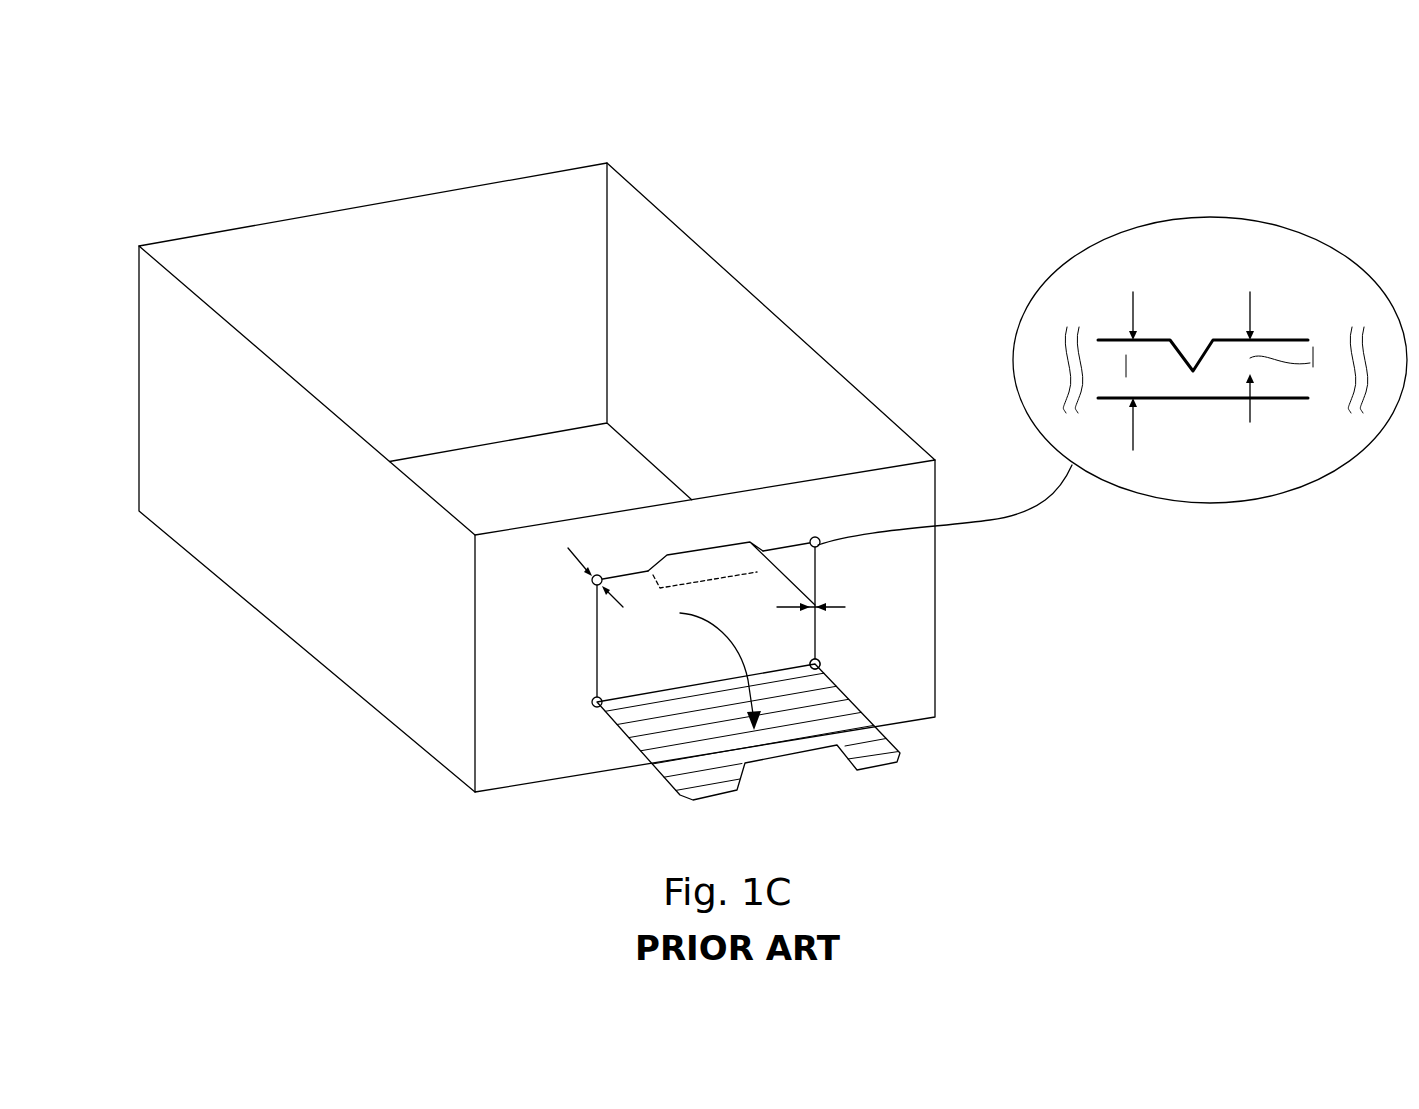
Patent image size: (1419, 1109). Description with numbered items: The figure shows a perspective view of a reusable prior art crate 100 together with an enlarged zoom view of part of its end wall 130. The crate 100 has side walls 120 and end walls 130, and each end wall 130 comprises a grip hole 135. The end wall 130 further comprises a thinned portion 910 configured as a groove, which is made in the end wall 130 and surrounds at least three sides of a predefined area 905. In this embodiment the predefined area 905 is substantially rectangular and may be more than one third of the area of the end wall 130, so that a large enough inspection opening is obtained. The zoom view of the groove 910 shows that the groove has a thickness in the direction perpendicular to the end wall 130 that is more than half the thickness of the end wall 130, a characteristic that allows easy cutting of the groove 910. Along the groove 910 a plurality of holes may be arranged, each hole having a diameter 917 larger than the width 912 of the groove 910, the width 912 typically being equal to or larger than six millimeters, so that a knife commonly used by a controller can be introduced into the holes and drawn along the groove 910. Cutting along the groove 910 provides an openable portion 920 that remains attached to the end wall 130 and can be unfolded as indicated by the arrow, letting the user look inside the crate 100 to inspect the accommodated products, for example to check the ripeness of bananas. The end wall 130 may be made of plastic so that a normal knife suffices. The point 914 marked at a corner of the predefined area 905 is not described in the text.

The crate 100 is at (243, 203).
The side wall 120 is at (300, 620).
The end wall 130 is at (537, 763).
The grip hole 135 is at (712, 567).
The predefined area 905 is at (613, 650).
The thinned portion 910 is at (1207, 217).
The width 912 is at (813, 620).
The hinge corner 914 is at (826, 669).
The diameter 917 is at (590, 583).
The openable portion 920 is at (787, 737).